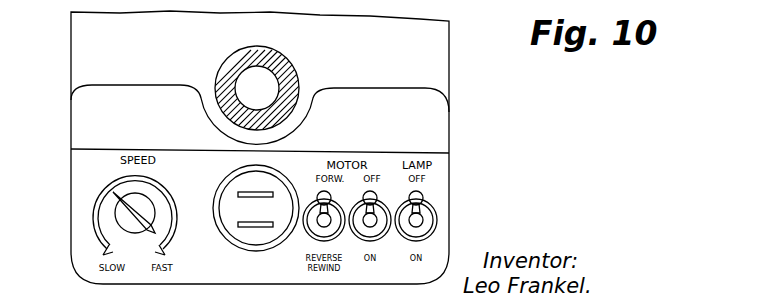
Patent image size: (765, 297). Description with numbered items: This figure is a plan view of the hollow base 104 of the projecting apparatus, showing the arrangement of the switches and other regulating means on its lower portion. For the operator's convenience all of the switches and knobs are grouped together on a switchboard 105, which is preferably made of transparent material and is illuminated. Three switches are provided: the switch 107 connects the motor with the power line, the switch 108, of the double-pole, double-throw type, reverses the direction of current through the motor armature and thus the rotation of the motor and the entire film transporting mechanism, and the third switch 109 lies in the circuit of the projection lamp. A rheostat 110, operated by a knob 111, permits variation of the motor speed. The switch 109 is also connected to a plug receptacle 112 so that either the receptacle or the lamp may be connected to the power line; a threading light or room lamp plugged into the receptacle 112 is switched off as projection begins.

The hollow base 104 is at (287, 63).
The switchboard 105 is at (84, 173).
The switch 107 is at (375, 192).
The switch 108 is at (322, 192).
The third switch 109 is at (418, 202).
The rheostat 110 is at (152, 202).
The knob 111 is at (125, 210).
The plug receptacle 112 is at (253, 253).